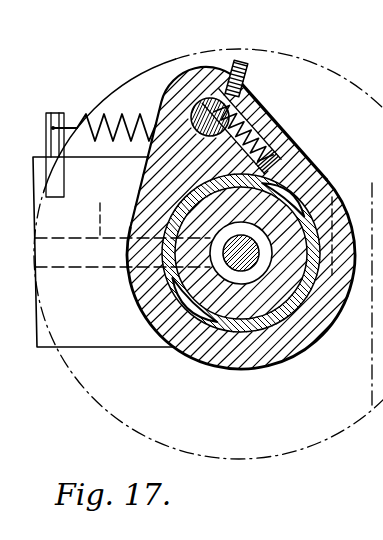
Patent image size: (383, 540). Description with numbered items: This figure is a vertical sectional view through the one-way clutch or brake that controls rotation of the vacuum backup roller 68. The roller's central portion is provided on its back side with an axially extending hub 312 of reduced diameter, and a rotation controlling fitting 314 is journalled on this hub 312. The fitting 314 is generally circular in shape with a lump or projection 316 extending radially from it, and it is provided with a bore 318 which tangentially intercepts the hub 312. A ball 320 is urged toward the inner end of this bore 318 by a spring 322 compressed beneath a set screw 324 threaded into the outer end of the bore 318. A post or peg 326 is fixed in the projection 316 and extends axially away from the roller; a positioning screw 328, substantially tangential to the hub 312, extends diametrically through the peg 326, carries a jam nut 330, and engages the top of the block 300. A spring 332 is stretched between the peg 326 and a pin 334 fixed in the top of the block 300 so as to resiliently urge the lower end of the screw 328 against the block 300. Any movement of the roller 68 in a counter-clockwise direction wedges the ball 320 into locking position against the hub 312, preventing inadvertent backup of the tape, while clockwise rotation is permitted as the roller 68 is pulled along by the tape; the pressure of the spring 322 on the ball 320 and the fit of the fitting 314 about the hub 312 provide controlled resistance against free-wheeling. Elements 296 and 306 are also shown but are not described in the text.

The vacuum backup roller 68 is at (266, 448).
The housing wall 296 is at (330, 180).
The block 300 is at (65, 345).
The shaft bore 306 is at (122, 227).
The hub 312 is at (282, 157).
The rotation controlling fitting 314 is at (300, 353).
The projection 316 is at (177, 87).
The bore 318 is at (262, 98).
The ball 320 is at (185, 167).
The spring 322 is at (280, 124).
The set screw 324 is at (208, 251).
The peg 326 is at (212, 112).
The positioning screw 328 is at (243, 70).
The jam nut 330 is at (252, 78).
The spring 332 is at (120, 113).
The pin 334 is at (55, 113).